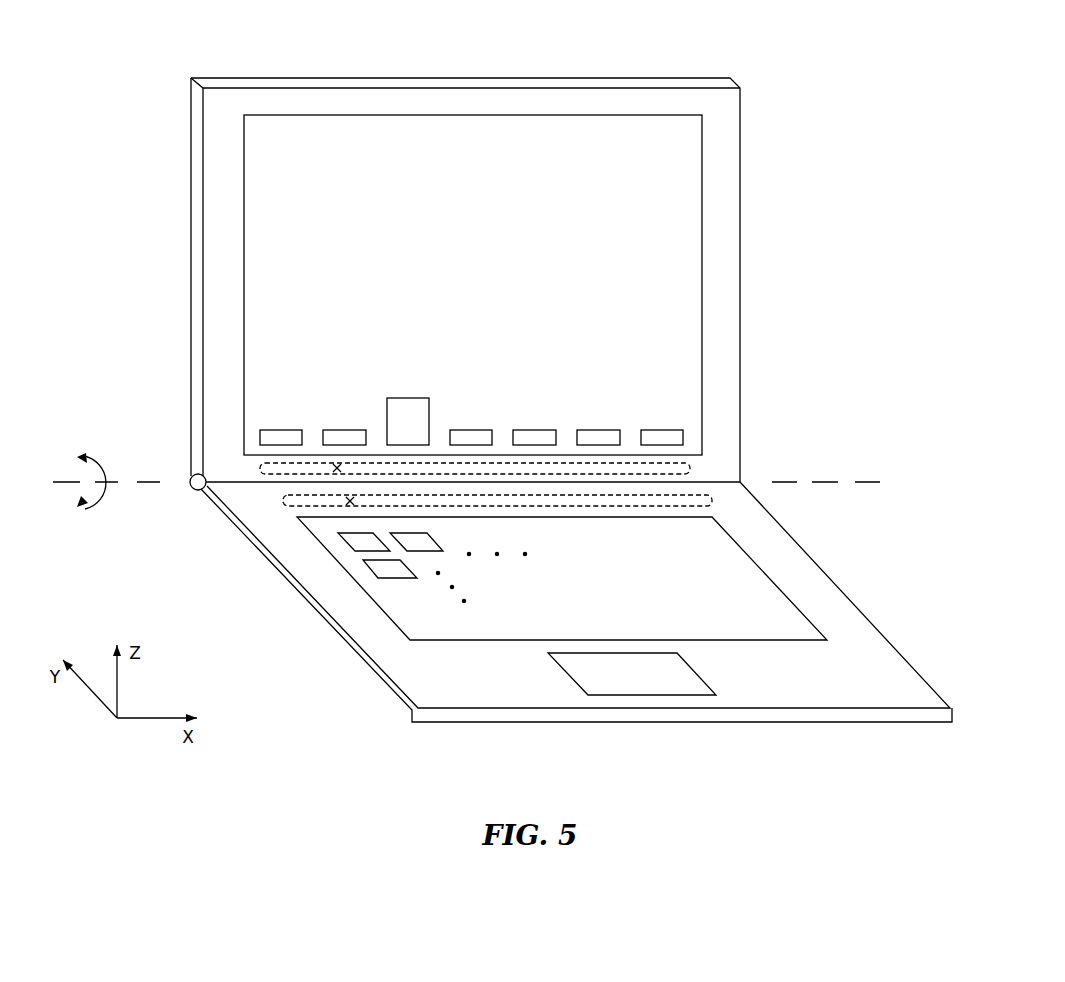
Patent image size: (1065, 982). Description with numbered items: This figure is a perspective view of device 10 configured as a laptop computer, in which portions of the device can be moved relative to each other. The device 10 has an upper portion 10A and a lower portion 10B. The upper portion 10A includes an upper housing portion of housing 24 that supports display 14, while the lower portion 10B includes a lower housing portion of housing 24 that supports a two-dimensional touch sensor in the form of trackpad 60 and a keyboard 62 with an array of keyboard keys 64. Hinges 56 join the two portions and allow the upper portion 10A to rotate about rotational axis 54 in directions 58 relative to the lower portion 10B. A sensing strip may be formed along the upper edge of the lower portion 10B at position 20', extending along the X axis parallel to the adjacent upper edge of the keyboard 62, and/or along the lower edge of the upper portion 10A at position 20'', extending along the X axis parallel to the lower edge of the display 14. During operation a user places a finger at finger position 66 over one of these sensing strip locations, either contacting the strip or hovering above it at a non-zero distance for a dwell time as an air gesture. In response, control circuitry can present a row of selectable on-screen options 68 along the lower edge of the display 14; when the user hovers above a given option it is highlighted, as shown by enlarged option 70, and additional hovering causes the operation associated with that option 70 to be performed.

The device 10 is at (850, 130).
The upper portion 10A is at (162, 78).
The lower portion 10B is at (396, 731).
The display 14 is at (670, 255).
The housing 24 is at (741, 350).
The rotational axis 54 is at (62, 481).
The hinges 56 is at (190, 487).
The directions 58 is at (82, 509).
The sensing strip position 20'' is at (531, 452).
The sensing strip position 20' is at (562, 509).
The finger position 66 is at (334, 465).
The selectable on-screen options 68 is at (344, 430).
The enlarged option 70 is at (410, 398).
The keyboard 62 is at (473, 628).
The keyboard keys 64 is at (425, 553).
The trackpad 60 is at (697, 672).